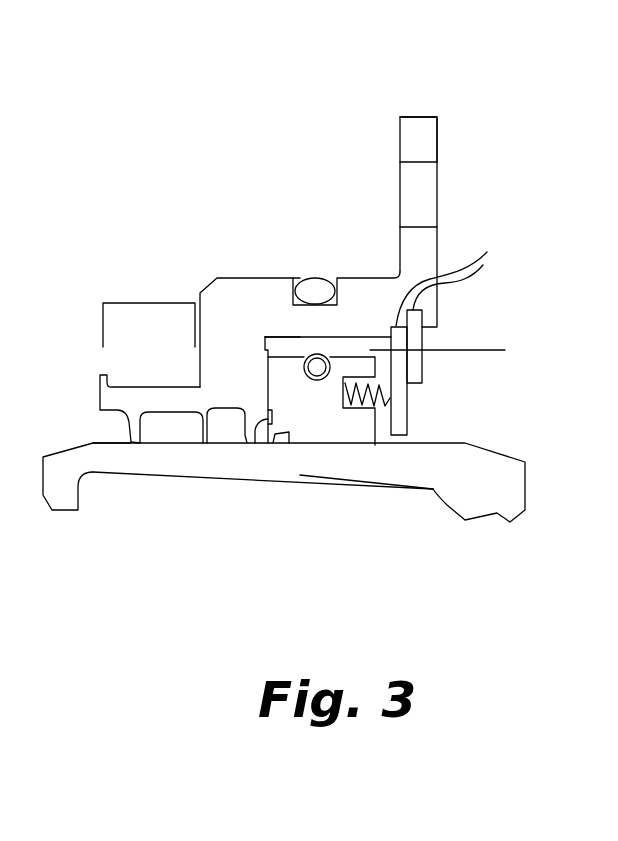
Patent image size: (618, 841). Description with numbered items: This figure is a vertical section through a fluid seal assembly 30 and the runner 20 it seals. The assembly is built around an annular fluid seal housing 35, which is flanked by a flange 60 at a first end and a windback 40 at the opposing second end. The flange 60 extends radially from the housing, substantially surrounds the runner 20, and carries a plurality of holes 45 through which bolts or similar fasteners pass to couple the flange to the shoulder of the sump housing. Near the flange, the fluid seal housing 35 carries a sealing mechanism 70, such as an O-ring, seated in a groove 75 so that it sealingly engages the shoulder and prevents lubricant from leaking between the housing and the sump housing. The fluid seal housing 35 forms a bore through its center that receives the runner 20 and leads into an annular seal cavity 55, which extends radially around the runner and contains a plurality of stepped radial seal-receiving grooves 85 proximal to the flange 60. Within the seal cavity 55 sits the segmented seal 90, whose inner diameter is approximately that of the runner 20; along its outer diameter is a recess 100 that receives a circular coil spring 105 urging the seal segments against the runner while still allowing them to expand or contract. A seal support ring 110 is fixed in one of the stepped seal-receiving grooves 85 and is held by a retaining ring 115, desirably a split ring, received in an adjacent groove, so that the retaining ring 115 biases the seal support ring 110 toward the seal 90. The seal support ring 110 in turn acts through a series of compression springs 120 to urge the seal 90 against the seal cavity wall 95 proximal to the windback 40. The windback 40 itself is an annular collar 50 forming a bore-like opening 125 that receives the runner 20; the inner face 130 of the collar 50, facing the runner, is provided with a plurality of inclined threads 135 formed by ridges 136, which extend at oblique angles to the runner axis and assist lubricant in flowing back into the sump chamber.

The runner 20 is at (510, 490).
The fluid seal assembly 30 is at (506, 81).
The annular fluid seal housing 35 is at (227, 278).
The windback 40 is at (145, 303).
The holes 45 is at (438, 190).
The annular collar 50 is at (145, 388).
The annular seal cavity 55 is at (451, 350).
The flange 60 is at (403, 117).
The sealing mechanism 70 is at (316, 278).
The groove 75 is at (297, 278).
The seal-receiving grooves 85 is at (450, 275).
The seal 90 is at (328, 391).
The seal cavity wall 95 is at (255, 443).
The recess 100 is at (300, 355).
The circular coil spring 105 is at (323, 355).
The seal support ring 110 is at (402, 422).
The retaining ring 115 is at (423, 344).
The springs 120 is at (392, 468).
The bore-like opening 125 is at (130, 442).
The inner face 130 is at (137, 430).
The inclined threads 135 is at (130, 445).
The ridges 136 is at (171, 427).